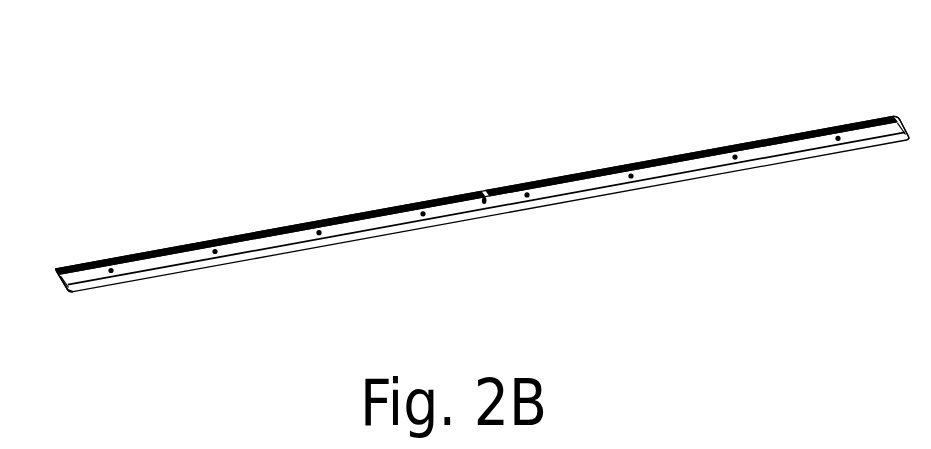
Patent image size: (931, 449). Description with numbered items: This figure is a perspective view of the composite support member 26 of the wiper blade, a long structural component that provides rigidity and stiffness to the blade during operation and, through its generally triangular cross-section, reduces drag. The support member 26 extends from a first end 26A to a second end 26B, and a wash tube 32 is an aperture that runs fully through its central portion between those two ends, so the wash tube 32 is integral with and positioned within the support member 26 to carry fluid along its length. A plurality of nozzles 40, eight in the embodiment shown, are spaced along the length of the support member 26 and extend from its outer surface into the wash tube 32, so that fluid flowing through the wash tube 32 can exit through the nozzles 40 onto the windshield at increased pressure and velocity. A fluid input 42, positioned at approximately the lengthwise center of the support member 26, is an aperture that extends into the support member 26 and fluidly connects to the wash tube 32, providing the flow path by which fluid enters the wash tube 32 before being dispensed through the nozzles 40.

The support member 26 is at (198, 144).
The first end 26A is at (875, 105).
The second end 26B is at (70, 240).
The wash tube 32 is at (62, 278).
The nozzles 40 is at (214, 254).
The fluid input 42 is at (486, 203).